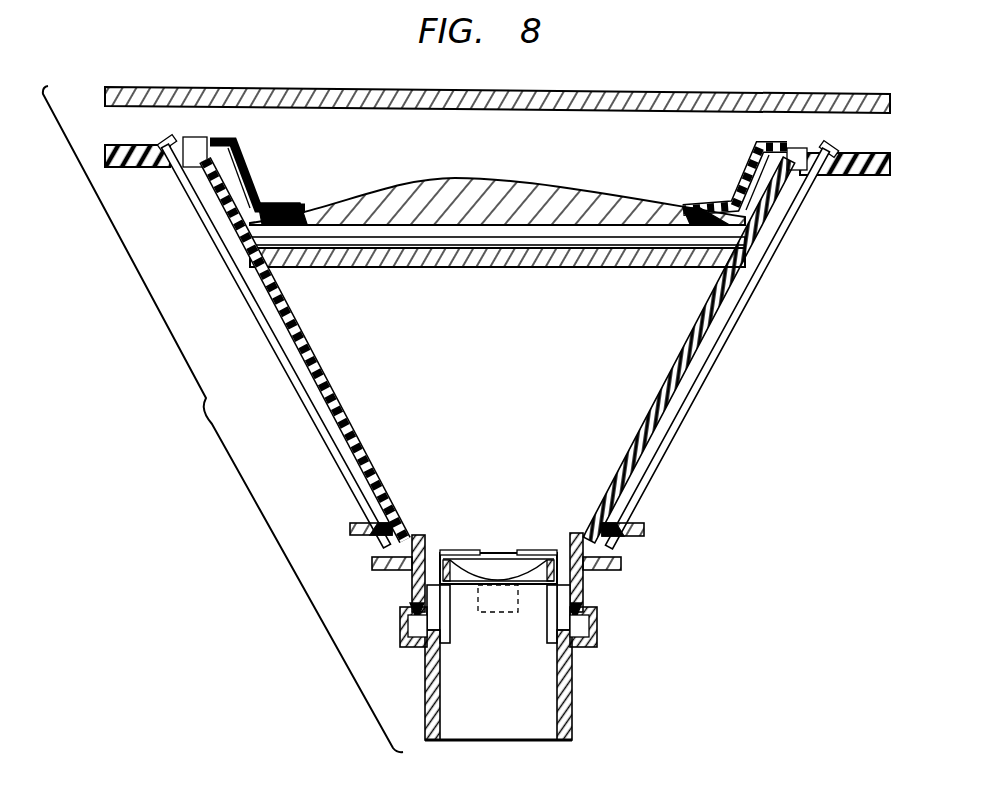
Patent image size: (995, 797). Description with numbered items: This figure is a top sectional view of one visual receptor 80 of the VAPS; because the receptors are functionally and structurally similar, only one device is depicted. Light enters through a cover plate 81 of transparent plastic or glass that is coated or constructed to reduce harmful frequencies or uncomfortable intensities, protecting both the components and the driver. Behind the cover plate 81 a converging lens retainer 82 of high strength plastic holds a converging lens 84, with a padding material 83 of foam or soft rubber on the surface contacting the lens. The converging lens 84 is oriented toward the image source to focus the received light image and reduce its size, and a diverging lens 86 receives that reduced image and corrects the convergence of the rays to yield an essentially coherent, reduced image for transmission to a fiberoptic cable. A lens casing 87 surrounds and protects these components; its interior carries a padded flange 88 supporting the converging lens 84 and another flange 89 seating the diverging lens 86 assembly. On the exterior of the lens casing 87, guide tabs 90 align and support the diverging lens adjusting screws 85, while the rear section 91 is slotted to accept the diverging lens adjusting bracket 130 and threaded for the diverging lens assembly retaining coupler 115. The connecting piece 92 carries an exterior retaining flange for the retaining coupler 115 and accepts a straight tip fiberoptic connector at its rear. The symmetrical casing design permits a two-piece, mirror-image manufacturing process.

The visual receptor 80 is at (747, 60).
The cover plate 81 is at (640, 93).
The converging lens retainer 82 is at (233, 147).
The padding material 83 is at (723, 239).
The converging lens 84 is at (603, 193).
The diverging lens adjusting screws 85 is at (281, 362).
The diverging lens 86 is at (488, 572).
The lens casing 87 is at (353, 410).
The padded flange 88 is at (500, 268).
The flange 89 is at (450, 633).
The guide tabs 90 is at (352, 528).
The rear section 91 is at (590, 680).
The connecting piece 92 is at (425, 660).
The diverging lens assembly retaining coupler 115 is at (405, 632).
The diverging lens adjusting bracket 130 is at (374, 563).